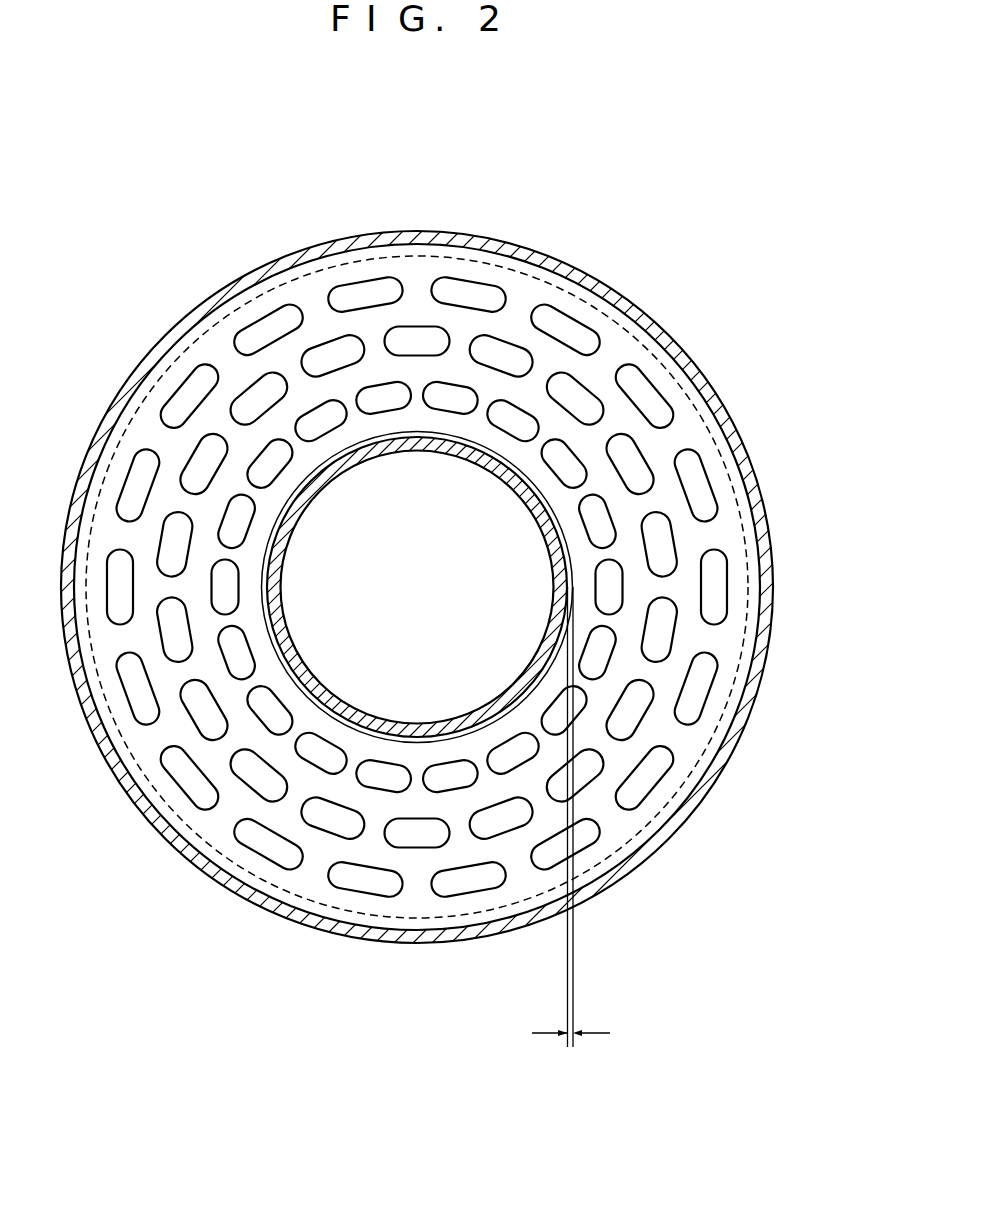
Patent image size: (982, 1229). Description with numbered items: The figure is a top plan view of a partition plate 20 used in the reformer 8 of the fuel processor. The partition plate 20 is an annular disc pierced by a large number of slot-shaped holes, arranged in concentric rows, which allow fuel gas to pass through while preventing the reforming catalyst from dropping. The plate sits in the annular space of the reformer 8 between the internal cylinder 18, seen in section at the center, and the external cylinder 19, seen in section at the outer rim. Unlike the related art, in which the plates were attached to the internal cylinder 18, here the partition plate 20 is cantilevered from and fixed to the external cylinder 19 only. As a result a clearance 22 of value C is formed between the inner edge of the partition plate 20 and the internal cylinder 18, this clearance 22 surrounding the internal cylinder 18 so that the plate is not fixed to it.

The reformer 8 is at (491, 608).
The internal cylinder 18 is at (545, 528).
The external cylinder 19 is at (762, 587).
The partition plate 20 is at (598, 368).
The clearance 22 is at (595, 1033).